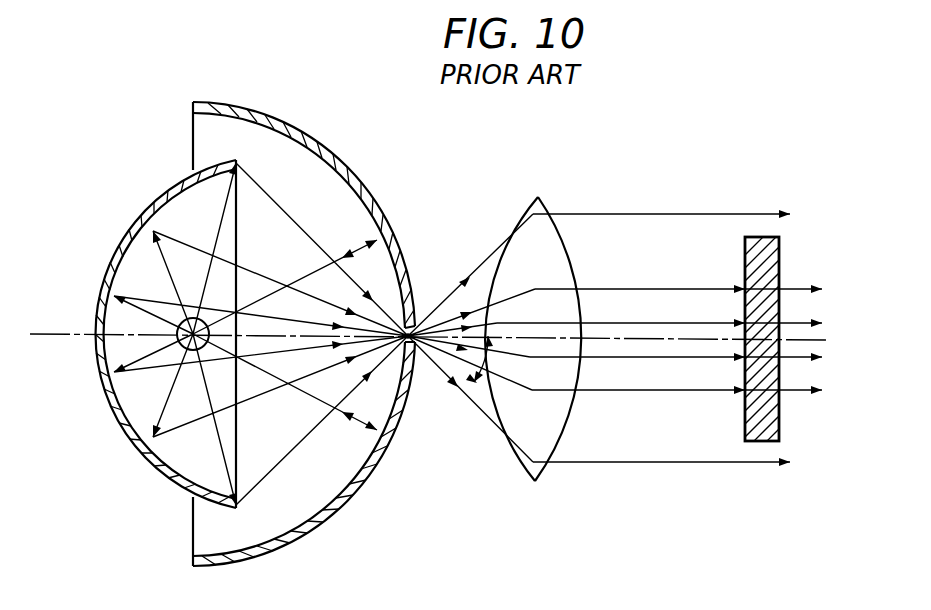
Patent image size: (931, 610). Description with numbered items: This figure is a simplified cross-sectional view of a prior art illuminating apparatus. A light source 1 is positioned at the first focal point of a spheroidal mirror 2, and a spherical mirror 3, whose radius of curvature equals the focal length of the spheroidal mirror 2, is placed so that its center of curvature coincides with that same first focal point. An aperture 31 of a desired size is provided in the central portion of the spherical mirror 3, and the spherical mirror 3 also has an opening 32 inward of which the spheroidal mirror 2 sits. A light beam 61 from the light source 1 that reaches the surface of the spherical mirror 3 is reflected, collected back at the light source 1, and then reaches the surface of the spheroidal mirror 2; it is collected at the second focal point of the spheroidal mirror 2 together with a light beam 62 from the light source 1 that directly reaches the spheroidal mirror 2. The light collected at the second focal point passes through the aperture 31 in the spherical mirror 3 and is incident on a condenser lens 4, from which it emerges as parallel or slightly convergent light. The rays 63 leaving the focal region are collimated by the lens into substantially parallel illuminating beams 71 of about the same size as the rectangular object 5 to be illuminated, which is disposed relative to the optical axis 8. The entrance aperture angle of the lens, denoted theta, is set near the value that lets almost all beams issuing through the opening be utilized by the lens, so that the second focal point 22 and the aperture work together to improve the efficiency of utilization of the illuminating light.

The light source 1 is at (177, 328).
The spheroidal mirror 2 is at (107, 397).
The spherical mirror 3 is at (312, 534).
The condenser lens 4 is at (539, 198).
The rectangular object 5 is at (757, 238).
The optical axis 8 is at (827, 341).
The second focal point 22 is at (420, 316).
The aperture 31 is at (407, 362).
The opening 32 is at (193, 133).
The light beam 61 is at (354, 244).
The light beam 62 is at (218, 222).
The rays 63 is at (472, 428).
The illuminating beams 71 is at (657, 483).